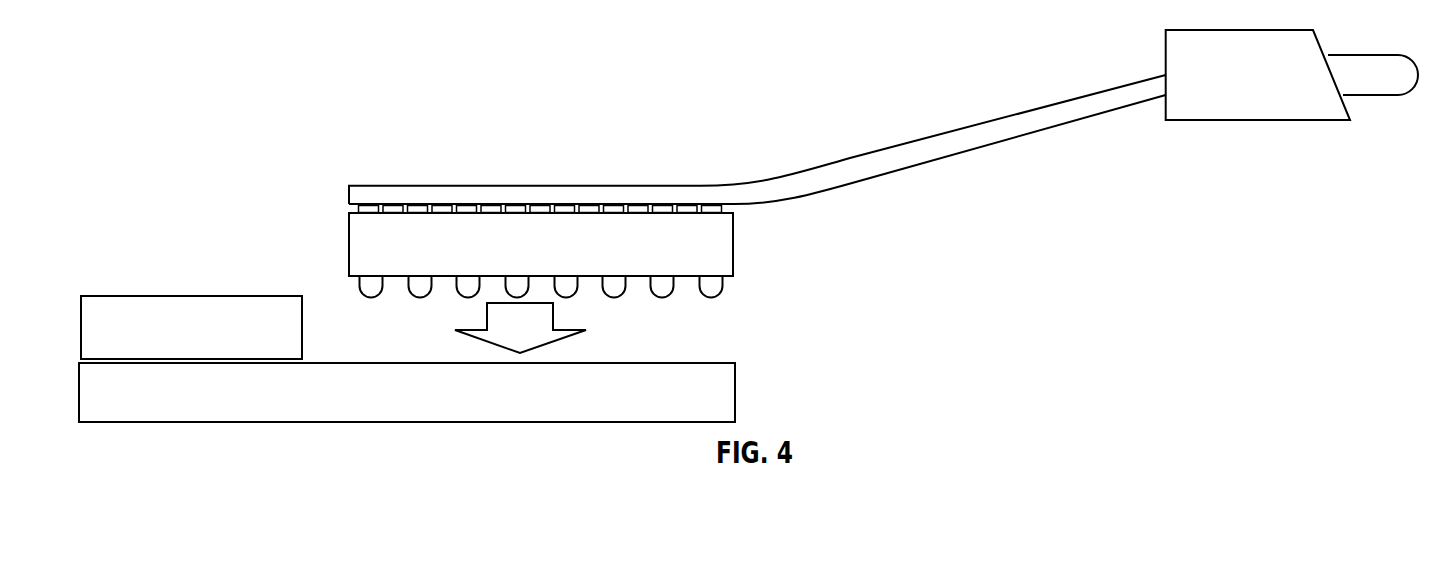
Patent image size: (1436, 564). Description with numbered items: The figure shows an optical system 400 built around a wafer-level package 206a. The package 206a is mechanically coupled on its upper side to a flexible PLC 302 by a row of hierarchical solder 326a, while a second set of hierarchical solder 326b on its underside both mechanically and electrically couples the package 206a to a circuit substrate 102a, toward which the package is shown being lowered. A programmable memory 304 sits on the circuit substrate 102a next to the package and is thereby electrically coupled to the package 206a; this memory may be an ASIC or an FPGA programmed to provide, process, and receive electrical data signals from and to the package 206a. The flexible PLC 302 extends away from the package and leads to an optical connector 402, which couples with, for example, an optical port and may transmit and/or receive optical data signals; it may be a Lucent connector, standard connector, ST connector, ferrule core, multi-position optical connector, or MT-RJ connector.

The optical system 400 is at (155, 62).
The optical connector 402 is at (1278, 87).
The flexible PLC 302 is at (438, 195).
The hierarchical solder 326a is at (365, 209).
The hierarchical solder 326b is at (713, 287).
The wafer-level package 206a is at (570, 257).
The programmable memory 304 is at (212, 341).
The circuit substrate 102a is at (436, 404).